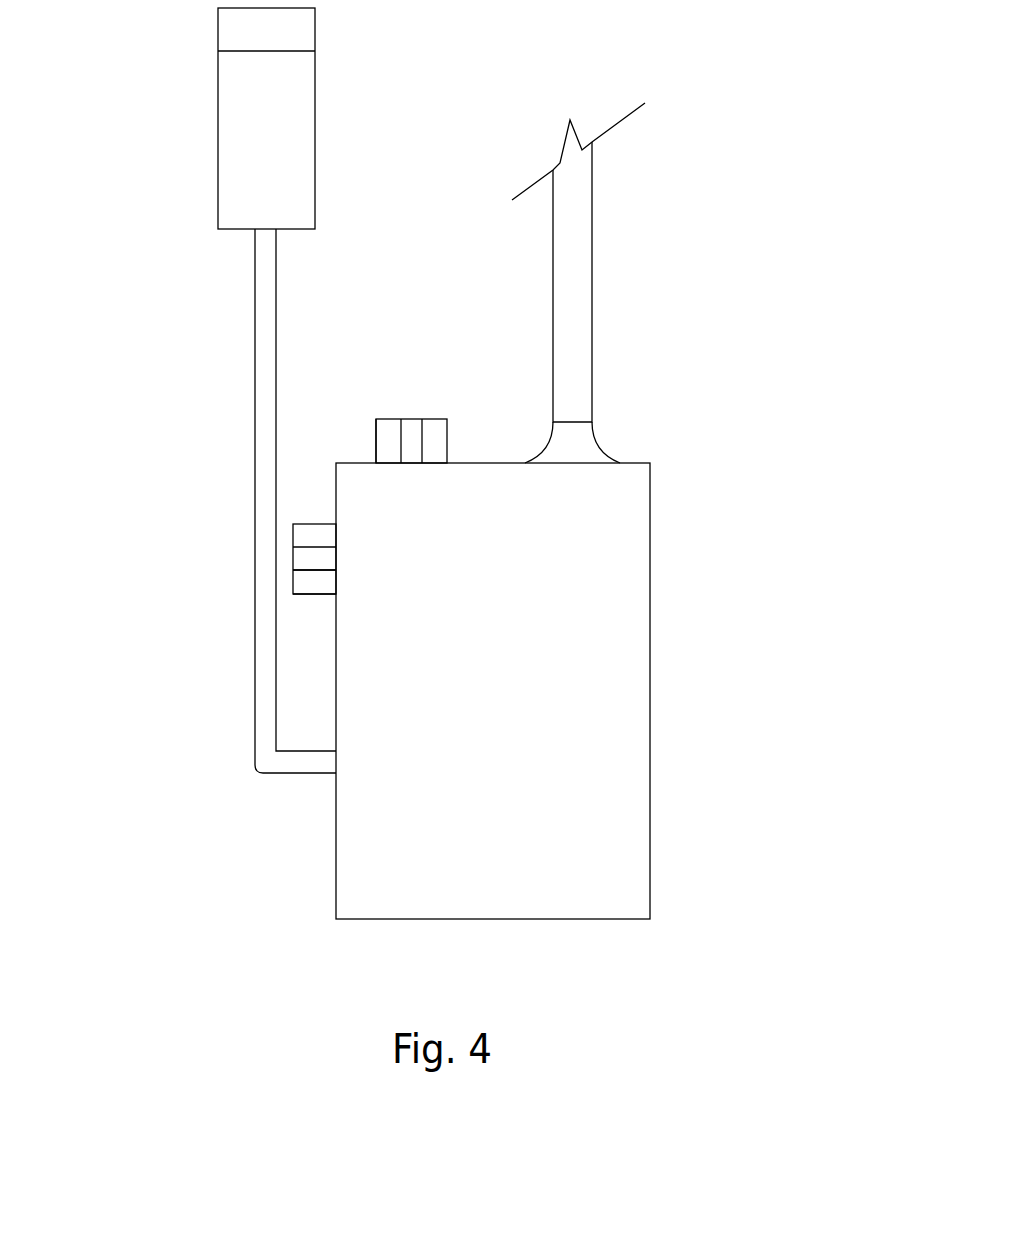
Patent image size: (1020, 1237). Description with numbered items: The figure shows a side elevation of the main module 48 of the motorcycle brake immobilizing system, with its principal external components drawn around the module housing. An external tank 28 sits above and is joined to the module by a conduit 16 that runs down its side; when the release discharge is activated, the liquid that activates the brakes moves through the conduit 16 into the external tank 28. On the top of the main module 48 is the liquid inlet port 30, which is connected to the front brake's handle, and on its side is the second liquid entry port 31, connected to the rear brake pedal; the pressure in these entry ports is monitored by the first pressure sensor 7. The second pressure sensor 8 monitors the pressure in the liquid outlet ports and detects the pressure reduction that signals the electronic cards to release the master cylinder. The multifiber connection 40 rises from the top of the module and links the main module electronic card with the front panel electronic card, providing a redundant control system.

The external tank 28 is at (277, 131).
The conduit 16 is at (253, 298).
The multifiber connection 40 is at (590, 310).
The liquid inlet port 30 is at (410, 420).
The first pressure sensor 7 is at (372, 430).
The liquid entry port 31 is at (290, 555).
The second pressure sensor 8 is at (328, 580).
The main module 48 is at (660, 727).